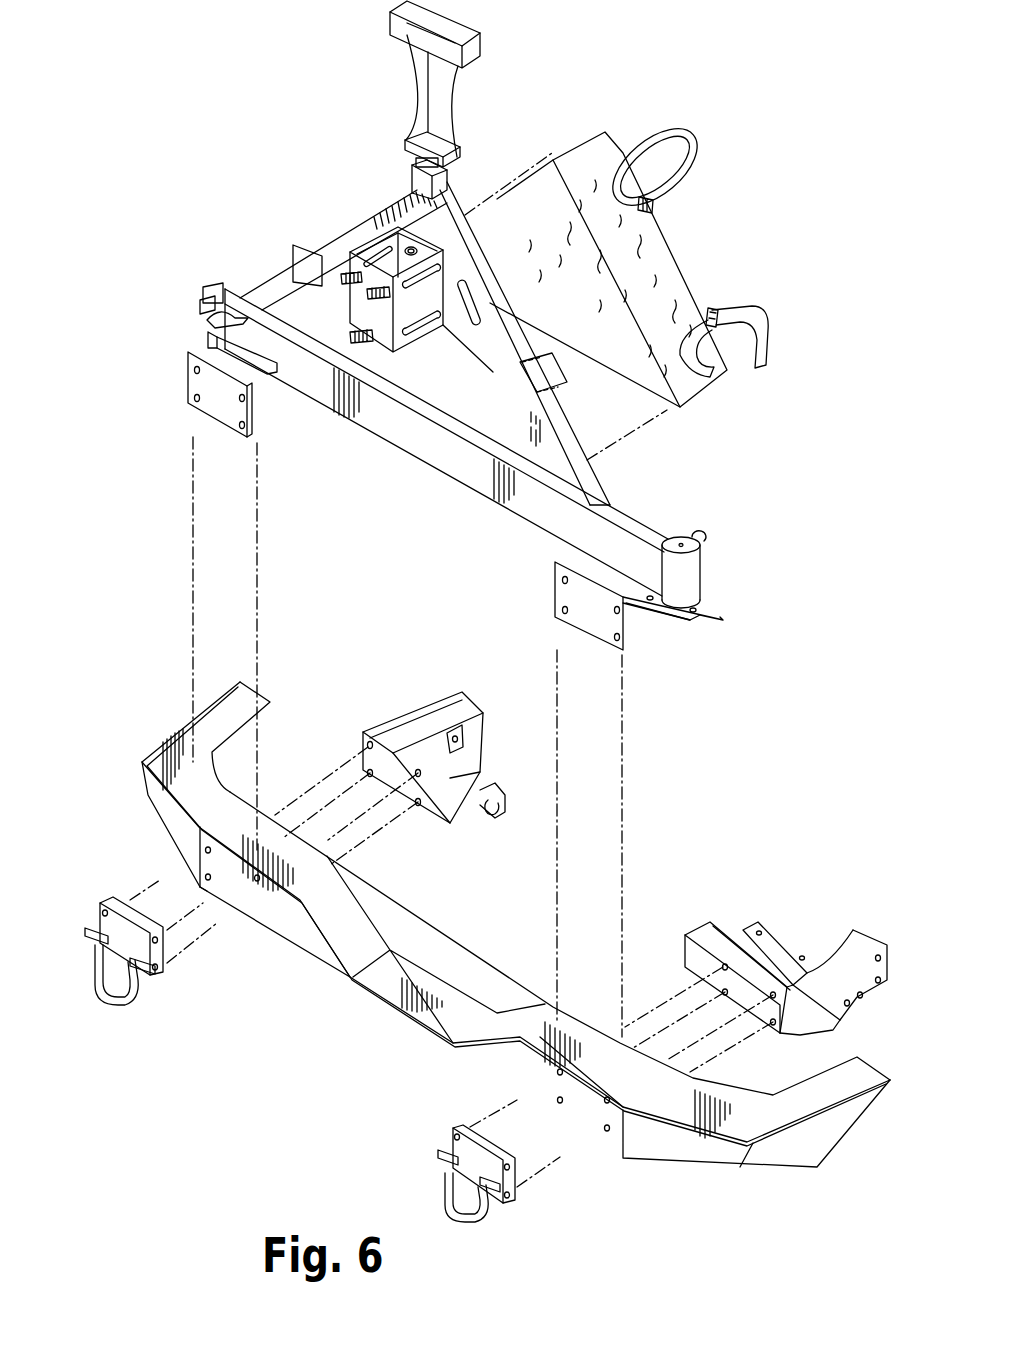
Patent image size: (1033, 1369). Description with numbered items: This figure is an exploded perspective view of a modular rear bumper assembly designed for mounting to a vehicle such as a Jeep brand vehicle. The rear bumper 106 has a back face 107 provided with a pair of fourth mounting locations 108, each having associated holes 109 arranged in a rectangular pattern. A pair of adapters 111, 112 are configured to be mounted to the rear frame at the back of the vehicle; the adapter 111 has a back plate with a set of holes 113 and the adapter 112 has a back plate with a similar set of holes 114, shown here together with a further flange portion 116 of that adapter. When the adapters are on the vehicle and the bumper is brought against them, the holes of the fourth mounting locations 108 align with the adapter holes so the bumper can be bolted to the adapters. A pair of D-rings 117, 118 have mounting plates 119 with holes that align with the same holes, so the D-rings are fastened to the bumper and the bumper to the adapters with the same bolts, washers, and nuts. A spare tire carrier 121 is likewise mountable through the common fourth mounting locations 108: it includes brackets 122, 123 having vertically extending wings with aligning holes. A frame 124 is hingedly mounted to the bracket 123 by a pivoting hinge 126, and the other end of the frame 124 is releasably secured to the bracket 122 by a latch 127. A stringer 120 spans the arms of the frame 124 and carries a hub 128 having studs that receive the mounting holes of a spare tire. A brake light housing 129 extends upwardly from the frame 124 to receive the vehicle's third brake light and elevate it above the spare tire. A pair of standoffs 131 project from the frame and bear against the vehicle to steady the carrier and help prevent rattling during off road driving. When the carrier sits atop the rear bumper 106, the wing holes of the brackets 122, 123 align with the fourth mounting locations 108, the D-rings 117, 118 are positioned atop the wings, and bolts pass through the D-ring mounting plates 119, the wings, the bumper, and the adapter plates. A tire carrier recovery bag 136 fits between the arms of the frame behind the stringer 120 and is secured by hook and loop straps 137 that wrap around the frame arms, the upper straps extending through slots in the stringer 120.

The rear bumper 106 is at (149, 703).
The back face 107 is at (297, 940).
The fourth mounting locations 108 is at (193, 870).
The holes 109 is at (207, 875).
The adapter 111 is at (406, 714).
The adapter 112 is at (802, 905).
The holes 113 is at (475, 773).
The holes 114 is at (773, 1022).
The flange 116 is at (838, 993).
The D-ring 117 is at (146, 992).
The D-ring 118 is at (425, 1155).
The shackle mounting plate 119 is at (160, 933).
The stringer 120 is at (466, 295).
The spare tire carrier 121 is at (266, 170).
The bracket 122 is at (270, 430).
The bracket 123 is at (647, 634).
The frame 124 is at (492, 302).
The pivoting hinge 126 is at (724, 555).
The latch 127 is at (178, 332).
The hub 128 is at (470, 245).
The brake light housing 129 is at (482, 88).
The standoffs 131 is at (323, 240).
The tire carrier recovery bag 136 is at (710, 170).
The hook and loop straps 137 is at (640, 148).